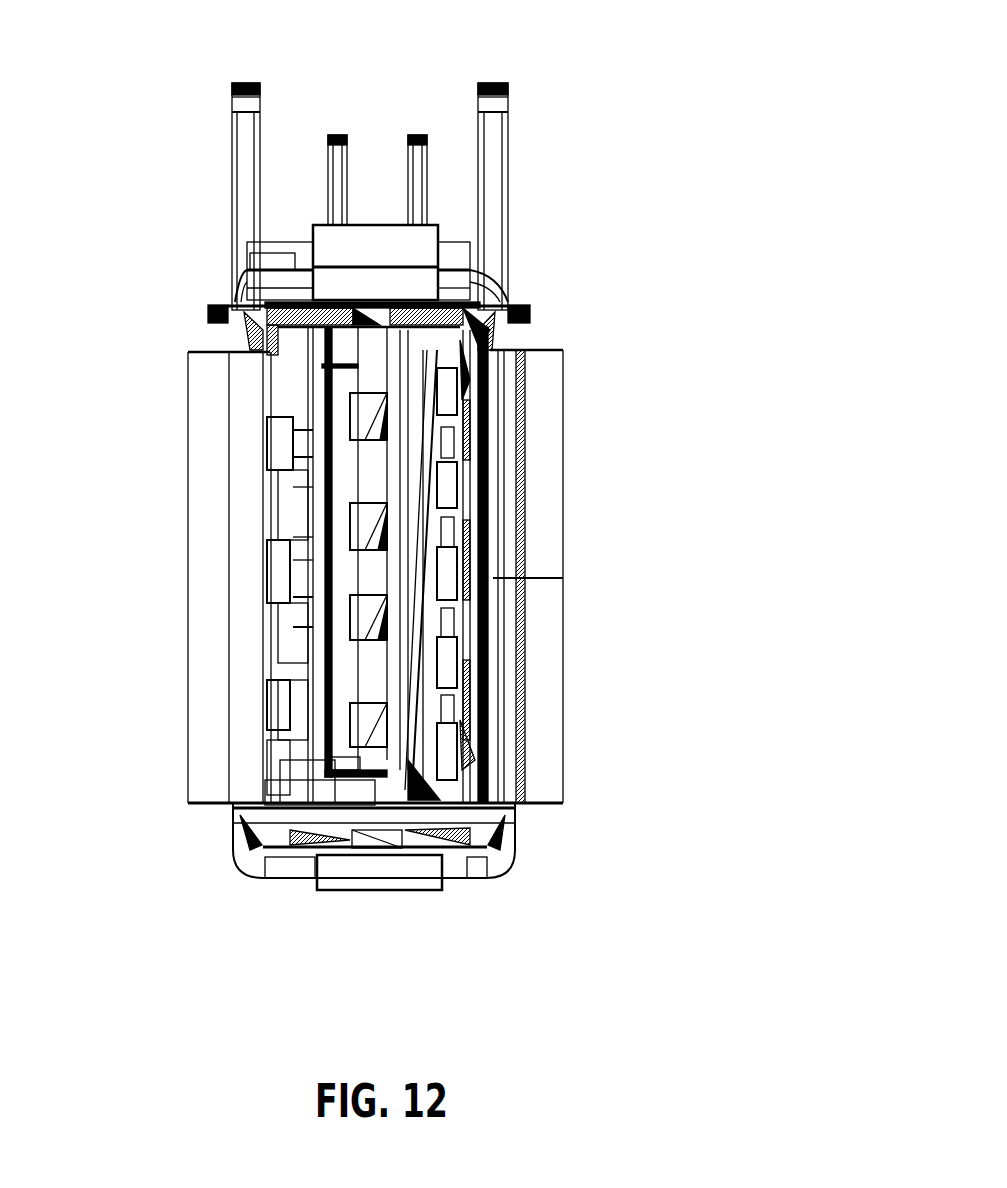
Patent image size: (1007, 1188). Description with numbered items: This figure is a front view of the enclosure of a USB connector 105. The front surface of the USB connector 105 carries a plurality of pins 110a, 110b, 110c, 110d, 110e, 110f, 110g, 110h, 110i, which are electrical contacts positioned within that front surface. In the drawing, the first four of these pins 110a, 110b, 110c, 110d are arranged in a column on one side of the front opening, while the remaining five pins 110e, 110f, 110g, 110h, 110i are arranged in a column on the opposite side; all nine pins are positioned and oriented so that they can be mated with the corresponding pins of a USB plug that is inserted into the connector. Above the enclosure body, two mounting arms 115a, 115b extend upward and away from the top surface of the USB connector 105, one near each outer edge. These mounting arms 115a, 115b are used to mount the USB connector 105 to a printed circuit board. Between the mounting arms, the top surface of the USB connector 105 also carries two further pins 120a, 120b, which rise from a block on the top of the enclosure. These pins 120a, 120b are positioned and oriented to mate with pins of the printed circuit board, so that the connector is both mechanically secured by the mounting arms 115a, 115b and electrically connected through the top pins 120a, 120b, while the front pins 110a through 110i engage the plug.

The USB connector 105 is at (340, 892).
The pin 110a is at (360, 408).
The pin 110b is at (360, 520).
The pin 110c is at (360, 612).
The pin 110d is at (360, 708).
The pin 110e is at (452, 395).
The pin 110f is at (452, 477).
The pin 110g is at (452, 568).
The pin 110h is at (452, 663).
The pin 110i is at (452, 745).
The mounting arm 115a is at (235, 83).
The mounting arm 115b is at (502, 83).
The pin 120a is at (338, 135).
The pin 120b is at (417, 135).